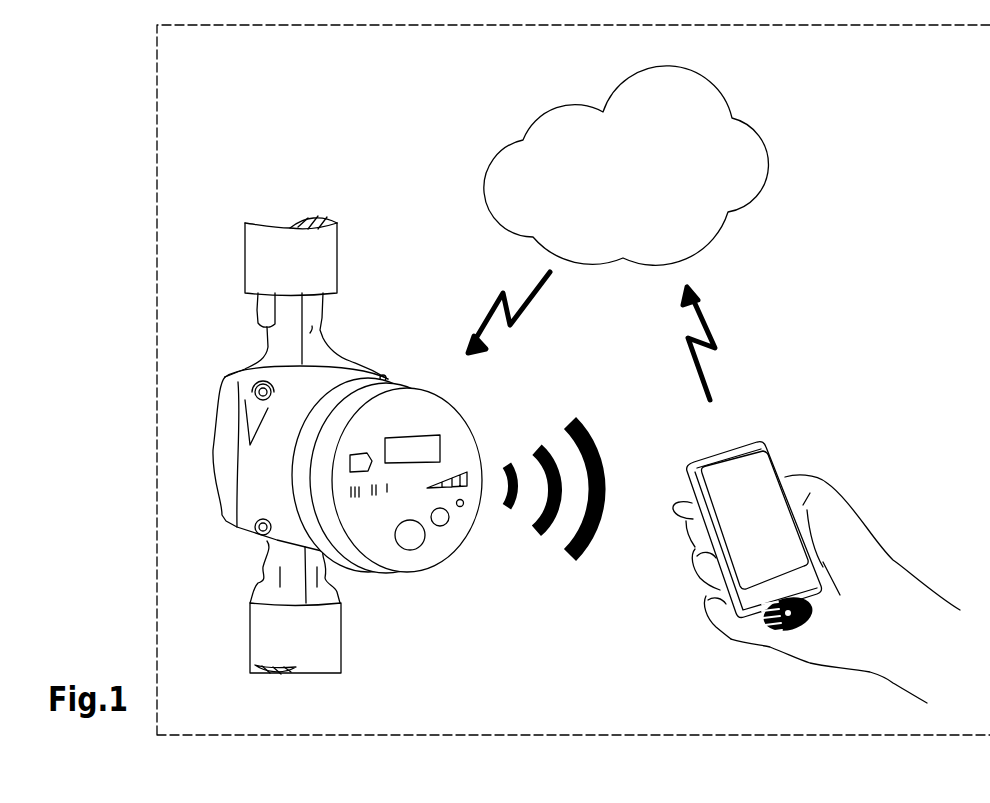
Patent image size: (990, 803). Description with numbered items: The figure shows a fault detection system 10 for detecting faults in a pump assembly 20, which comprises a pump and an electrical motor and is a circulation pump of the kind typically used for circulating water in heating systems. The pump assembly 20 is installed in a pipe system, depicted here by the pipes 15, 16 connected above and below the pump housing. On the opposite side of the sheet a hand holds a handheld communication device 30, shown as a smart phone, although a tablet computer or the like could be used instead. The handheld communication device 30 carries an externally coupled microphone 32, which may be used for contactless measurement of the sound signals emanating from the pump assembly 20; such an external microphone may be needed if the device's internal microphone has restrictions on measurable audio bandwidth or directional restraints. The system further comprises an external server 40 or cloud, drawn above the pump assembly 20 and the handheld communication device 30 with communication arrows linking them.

The fault detection system 10 is at (157, 165).
The pipe 15 is at (330, 250).
The pipe 16 is at (330, 657).
The pump assembly 20 is at (362, 542).
The handheld communication device 30 is at (778, 463).
The externally coupled microphone 32 is at (770, 635).
The external server 40 is at (520, 165).